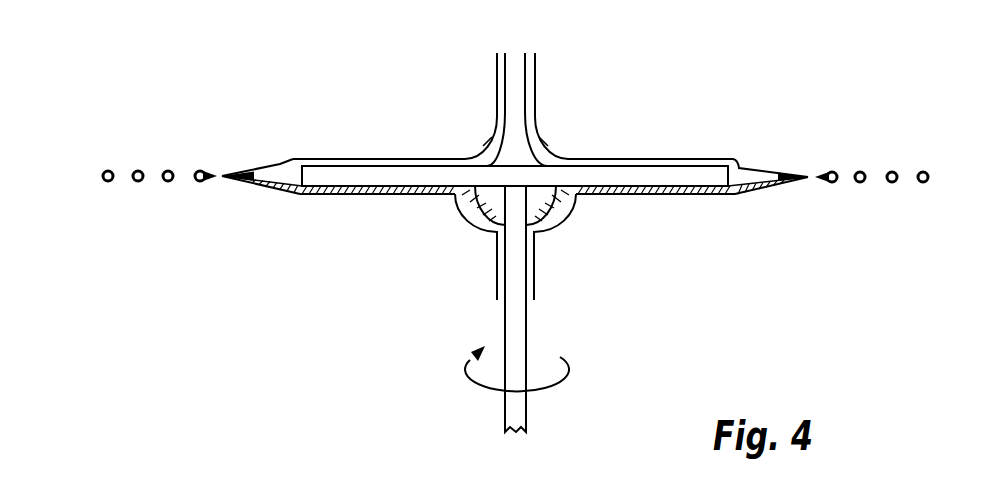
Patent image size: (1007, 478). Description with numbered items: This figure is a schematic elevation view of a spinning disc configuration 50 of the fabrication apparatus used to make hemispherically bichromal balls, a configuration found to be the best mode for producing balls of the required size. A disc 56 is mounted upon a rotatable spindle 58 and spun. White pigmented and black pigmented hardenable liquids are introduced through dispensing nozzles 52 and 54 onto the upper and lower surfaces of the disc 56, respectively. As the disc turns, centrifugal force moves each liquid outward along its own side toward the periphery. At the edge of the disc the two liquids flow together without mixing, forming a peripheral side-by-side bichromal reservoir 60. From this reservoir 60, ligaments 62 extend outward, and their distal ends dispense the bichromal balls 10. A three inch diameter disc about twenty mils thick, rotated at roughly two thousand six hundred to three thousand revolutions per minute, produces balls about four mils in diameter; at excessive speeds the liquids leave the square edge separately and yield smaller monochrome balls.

The balls 10 is at (862, 170).
The spinning disc configuration 50 is at (400, 86).
The dispensing nozzle 52 is at (498, 87).
The dispensing nozzle 54 is at (498, 260).
The disc 56 is at (685, 197).
The rotatable spindle 58 is at (520, 352).
The peripheral side-by-side bichromal reservoir 60 is at (737, 170).
The ligaments 62 is at (783, 175).